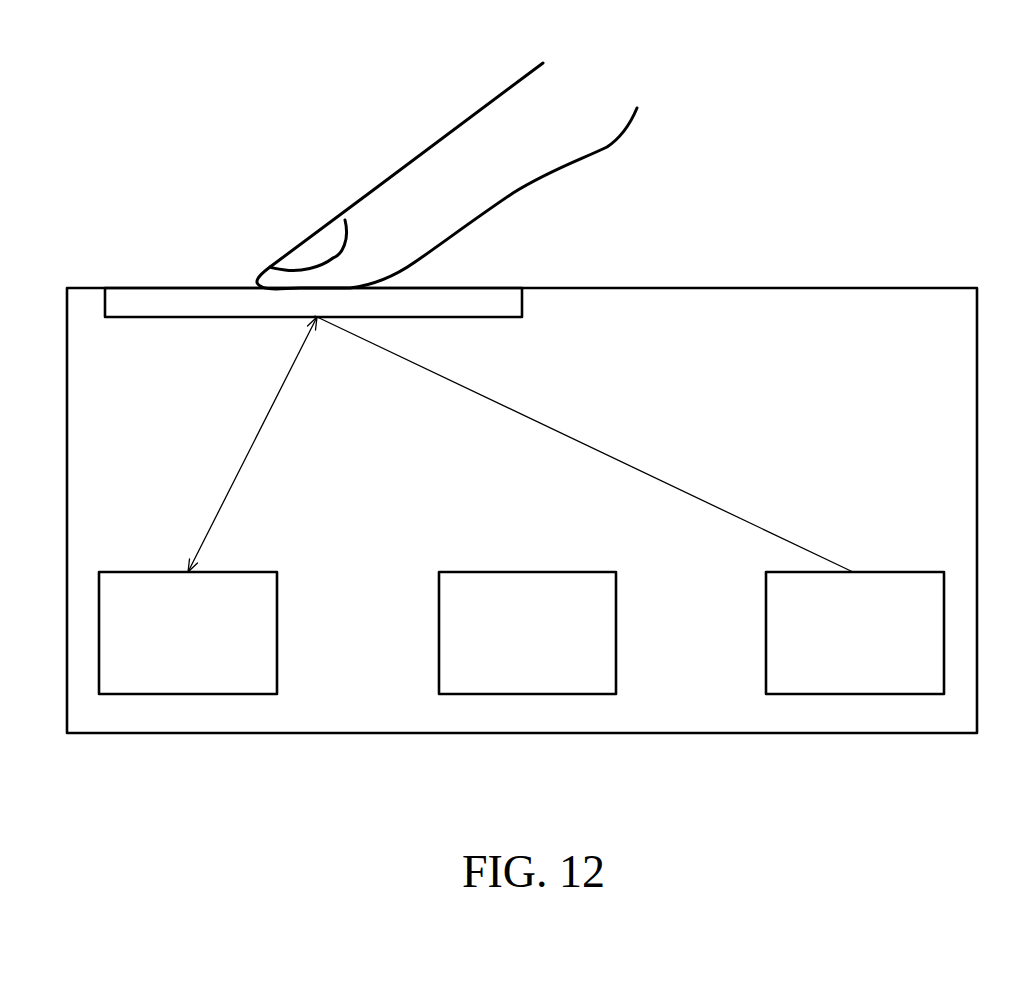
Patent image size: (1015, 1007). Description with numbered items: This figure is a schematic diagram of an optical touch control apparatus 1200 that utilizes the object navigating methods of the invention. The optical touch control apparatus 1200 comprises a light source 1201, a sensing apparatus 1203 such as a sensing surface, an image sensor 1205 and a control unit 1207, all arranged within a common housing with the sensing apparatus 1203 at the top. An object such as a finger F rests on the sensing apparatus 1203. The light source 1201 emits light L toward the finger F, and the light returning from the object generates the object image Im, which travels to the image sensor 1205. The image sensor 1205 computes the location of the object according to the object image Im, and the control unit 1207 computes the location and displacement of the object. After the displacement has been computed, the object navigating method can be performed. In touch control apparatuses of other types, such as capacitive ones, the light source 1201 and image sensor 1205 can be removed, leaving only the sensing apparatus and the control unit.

The optical touch control apparatus 1200 is at (698, 735).
The light source 1201 is at (853, 695).
The sensing apparatus 1203 is at (490, 297).
The image sensor 1205 is at (187, 695).
The control unit 1207 is at (527, 695).
The finger F is at (425, 167).
The light L is at (584, 444).
The object image Im is at (252, 444).